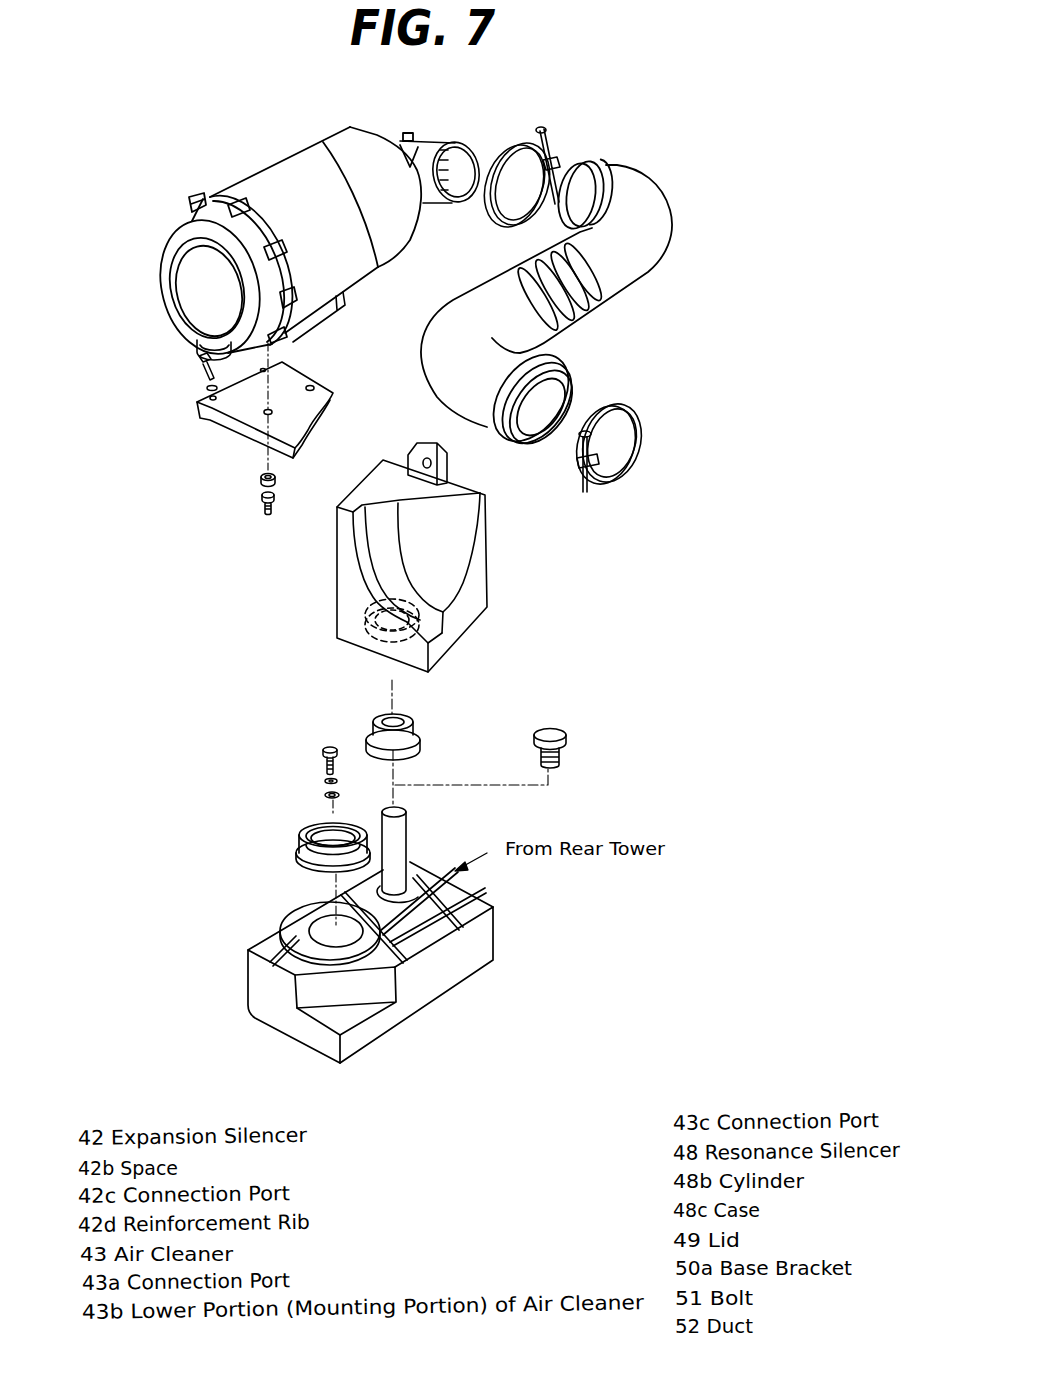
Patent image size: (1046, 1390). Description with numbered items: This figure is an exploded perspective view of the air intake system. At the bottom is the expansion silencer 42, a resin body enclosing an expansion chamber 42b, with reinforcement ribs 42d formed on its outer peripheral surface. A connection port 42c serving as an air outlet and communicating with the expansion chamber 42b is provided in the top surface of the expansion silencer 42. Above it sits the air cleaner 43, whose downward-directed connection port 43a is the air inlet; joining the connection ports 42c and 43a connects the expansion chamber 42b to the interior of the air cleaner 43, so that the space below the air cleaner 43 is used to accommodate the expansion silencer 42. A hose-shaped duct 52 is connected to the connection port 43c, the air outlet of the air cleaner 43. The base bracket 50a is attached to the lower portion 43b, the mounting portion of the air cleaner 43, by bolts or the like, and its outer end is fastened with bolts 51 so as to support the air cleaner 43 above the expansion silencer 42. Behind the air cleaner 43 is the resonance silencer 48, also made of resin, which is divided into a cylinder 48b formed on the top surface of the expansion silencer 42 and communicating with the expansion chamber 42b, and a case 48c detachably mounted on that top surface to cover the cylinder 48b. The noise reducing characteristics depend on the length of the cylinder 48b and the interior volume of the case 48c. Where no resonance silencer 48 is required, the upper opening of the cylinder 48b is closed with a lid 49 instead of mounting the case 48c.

The expansion silencer 42 is at (393, 943).
The expansion chamber 42b is at (467, 883).
The connection port 42c is at (327, 928).
The reinforcement ribs 42d is at (440, 933).
The air cleaner 43 is at (277, 187).
The connection port 43a is at (192, 345).
The lower portion (mounting portion) of air cleaner 43b is at (346, 300).
The connection port 43c is at (462, 162).
The resonance silencer 48 is at (390, 463).
The cylinder 48b is at (395, 846).
The case 48c is at (336, 585).
The lid 49 is at (557, 731).
The base bracket 50a is at (218, 432).
The bolts 51 is at (202, 358).
The duct 52 is at (643, 197).